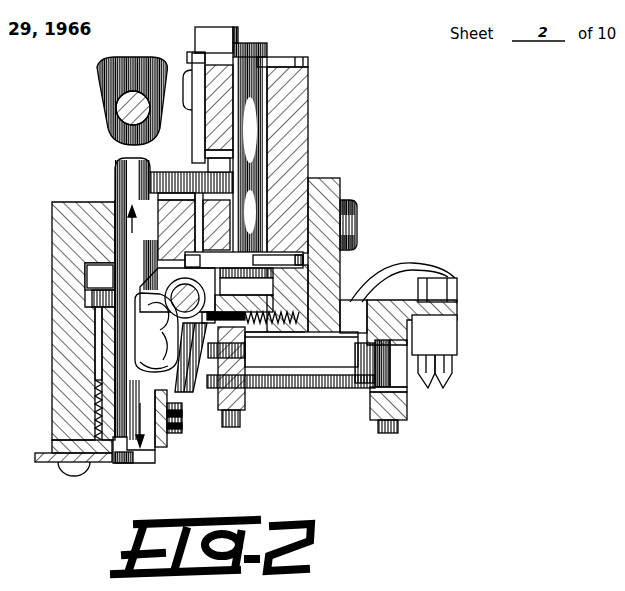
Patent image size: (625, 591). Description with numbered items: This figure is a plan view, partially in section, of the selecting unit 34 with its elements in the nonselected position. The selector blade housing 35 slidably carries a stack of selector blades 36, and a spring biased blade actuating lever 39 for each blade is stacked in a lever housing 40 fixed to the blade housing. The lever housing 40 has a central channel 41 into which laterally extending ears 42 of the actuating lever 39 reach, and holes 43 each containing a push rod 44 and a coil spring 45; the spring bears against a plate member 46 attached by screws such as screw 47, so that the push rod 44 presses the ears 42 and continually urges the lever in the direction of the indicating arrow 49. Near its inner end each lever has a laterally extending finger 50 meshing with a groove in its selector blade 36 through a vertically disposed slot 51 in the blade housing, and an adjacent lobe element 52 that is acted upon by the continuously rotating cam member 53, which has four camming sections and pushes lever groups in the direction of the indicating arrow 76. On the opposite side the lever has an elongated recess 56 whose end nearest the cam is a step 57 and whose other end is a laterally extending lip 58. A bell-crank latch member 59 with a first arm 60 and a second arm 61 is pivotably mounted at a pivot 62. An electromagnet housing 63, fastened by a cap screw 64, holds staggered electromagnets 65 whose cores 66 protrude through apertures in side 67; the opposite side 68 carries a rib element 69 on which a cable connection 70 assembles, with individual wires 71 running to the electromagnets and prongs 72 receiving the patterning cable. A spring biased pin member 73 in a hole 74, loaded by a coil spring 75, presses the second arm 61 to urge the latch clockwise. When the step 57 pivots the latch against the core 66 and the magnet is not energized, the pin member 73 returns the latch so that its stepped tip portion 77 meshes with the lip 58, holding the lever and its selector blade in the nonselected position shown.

The selecting unit 34 is at (312, 152).
The selector blade housing 35 is at (296, 100).
The selector blades 36 is at (262, 44).
The blade actuating lever 39 is at (115, 184).
The lever housing 40 is at (62, 385).
The channel 41 is at (85, 285).
The laterally extending ears 42 is at (92, 298).
The holes 43 is at (76, 443).
The push rod 44 is at (105, 357).
The coil spring 45 is at (95, 413).
The plate member 46 is at (36, 455).
The screw 47 is at (73, 474).
The indicating arrow 49 is at (133, 326).
The laterally extending finger 50 is at (173, 175).
The vertically disposed slot 51 is at (211, 156).
The lobe element 52 is at (122, 160).
The cam member 53 is at (101, 121).
The elongated recess 56 is at (163, 349).
The step 57 is at (137, 287).
The laterally extending lip 58 is at (167, 382).
The latch member 59 is at (210, 284).
The first arm 60 is at (156, 332).
The second arm 61 is at (178, 392).
The pivot 62 is at (173, 280).
The electromagnet housing 63 is at (331, 282).
The cap screw 64 is at (352, 232).
The electromagnet 65 is at (314, 360).
The core 66 is at (188, 392).
The side of electromagnet housing 67 is at (246, 402).
The opposite side of electromagnet housing 68 is at (397, 303).
The rib element 69 is at (457, 303).
The cable connection 70 is at (447, 344).
The individual wires 71 is at (410, 265).
The prongs 72 is at (435, 383).
The pin member 73 is at (254, 334).
The hole 74 is at (292, 334).
The coil spring 75 is at (301, 349).
The indicating arrow 76 is at (156, 448).
The stepped tip portion 77 is at (154, 359).